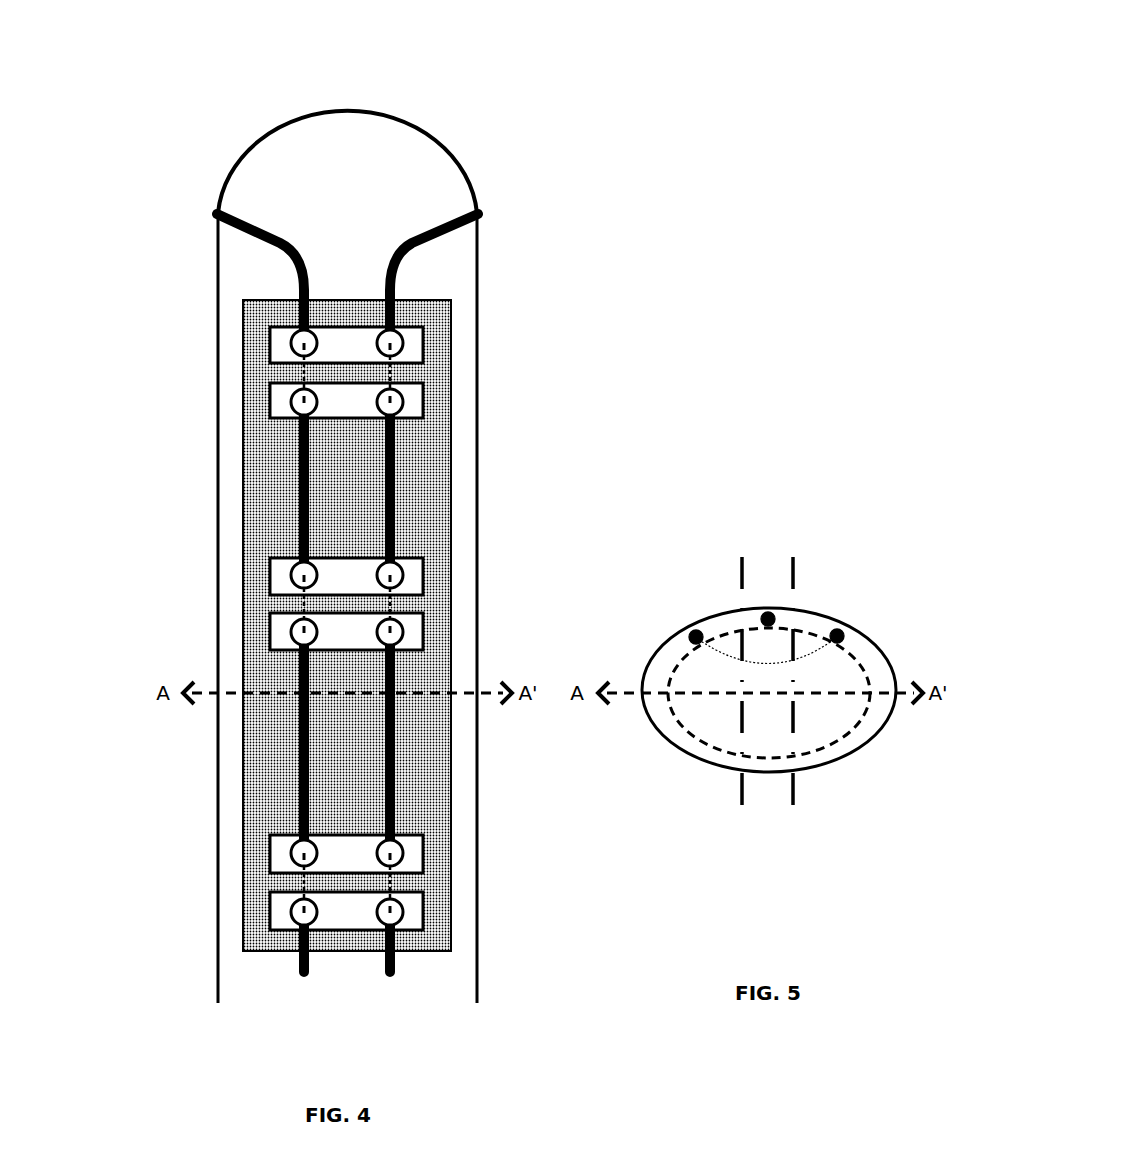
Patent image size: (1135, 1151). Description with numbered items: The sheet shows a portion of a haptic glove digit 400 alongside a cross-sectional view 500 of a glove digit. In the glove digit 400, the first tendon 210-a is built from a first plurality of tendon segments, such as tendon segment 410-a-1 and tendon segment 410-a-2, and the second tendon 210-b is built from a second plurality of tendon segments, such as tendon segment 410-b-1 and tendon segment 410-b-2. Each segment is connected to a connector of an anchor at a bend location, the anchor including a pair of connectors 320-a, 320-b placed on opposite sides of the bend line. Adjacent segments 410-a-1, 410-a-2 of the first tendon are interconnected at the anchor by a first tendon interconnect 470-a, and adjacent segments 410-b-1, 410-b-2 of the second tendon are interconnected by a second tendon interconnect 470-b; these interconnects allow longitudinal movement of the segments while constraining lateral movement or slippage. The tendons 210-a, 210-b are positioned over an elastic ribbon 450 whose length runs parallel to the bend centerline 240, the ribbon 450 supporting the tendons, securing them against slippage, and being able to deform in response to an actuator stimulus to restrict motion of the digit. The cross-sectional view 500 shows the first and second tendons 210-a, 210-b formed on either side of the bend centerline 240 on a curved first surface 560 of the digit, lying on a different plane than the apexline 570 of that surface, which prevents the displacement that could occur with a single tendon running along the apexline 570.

In FIG. 4, the glove digit 400 is at (75, 29).
In FIG. 4, the tendon segment 410-a-1 is at (257, 228).
In FIG. 4, the tendon segment 410-b-1 is at (425, 228).
In FIG. 4, the tendon segment 410-a-2 is at (298, 537).
In FIG. 4, the tendon segment 410-b-2 is at (398, 497).
In FIG. 4, the connector 320-a is at (280, 333).
In FIG. 4, the connector 320-b is at (283, 408).
In FIG. 4, the first tendon interconnect 470-a is at (303, 368).
In FIG. 4, the second tendon interconnect 470-b is at (390, 372).
In FIG. 4, the elastic ribbon 450 is at (266, 732).
In FIG. 5, the cross-sectional view 500 is at (870, 406).
In FIG. 5, the bend centerline 240 is at (766, 612).
In FIG. 5, the apexline 570 is at (769, 612).
In FIG. 5, the first surface 560 is at (857, 660).
In FIG. 5, the first tendon 210-a is at (696, 645).
In FIG. 5, the second tendon 210-b is at (837, 644).